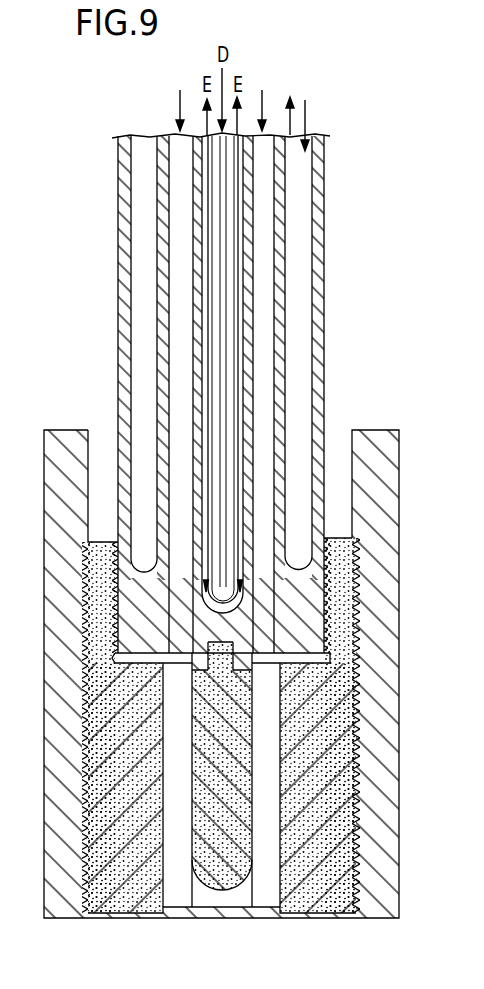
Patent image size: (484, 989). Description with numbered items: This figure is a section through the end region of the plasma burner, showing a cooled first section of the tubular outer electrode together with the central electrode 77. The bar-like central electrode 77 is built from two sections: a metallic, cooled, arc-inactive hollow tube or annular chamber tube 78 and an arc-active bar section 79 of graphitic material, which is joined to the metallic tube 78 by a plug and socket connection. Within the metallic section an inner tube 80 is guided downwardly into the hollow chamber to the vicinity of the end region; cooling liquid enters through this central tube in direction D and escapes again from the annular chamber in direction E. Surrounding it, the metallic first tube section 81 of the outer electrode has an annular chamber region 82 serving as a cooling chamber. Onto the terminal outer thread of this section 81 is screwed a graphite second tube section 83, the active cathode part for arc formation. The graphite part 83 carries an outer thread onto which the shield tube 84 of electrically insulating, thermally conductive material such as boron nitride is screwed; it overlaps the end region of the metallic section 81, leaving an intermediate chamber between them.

The central electrode 77 is at (255, 296).
The annular chamber tube 78 is at (248, 205).
The arc-active bar section 79 is at (228, 893).
The inner tube 80 is at (218, 312).
The first tube section of the outer electrode 81 is at (123, 257).
The annular chamber region 82 is at (302, 340).
The second tube section 83 is at (335, 770).
The shield tube 84 is at (380, 597).